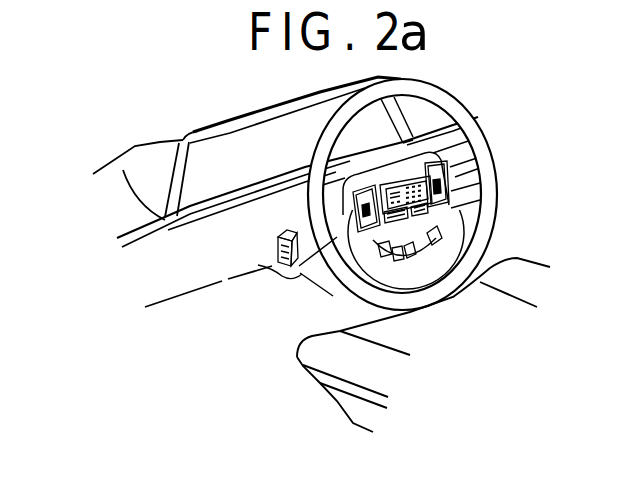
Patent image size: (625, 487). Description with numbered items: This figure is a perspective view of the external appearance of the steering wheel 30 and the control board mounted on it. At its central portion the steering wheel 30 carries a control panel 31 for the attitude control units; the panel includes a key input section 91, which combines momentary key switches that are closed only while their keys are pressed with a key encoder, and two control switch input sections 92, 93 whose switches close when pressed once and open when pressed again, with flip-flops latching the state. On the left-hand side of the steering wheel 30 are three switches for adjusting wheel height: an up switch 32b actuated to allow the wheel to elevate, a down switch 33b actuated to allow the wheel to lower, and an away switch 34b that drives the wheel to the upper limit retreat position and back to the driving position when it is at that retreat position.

The steering wheel 30 is at (436, 94).
The control panel 31 is at (424, 250).
The key input section 91 is at (447, 158).
The control switch input section 92 is at (438, 211).
The control switch input section 93 is at (377, 226).
The up switch 32b is at (279, 239).
The down switch 33b is at (279, 258).
The away switch 34b is at (291, 273).